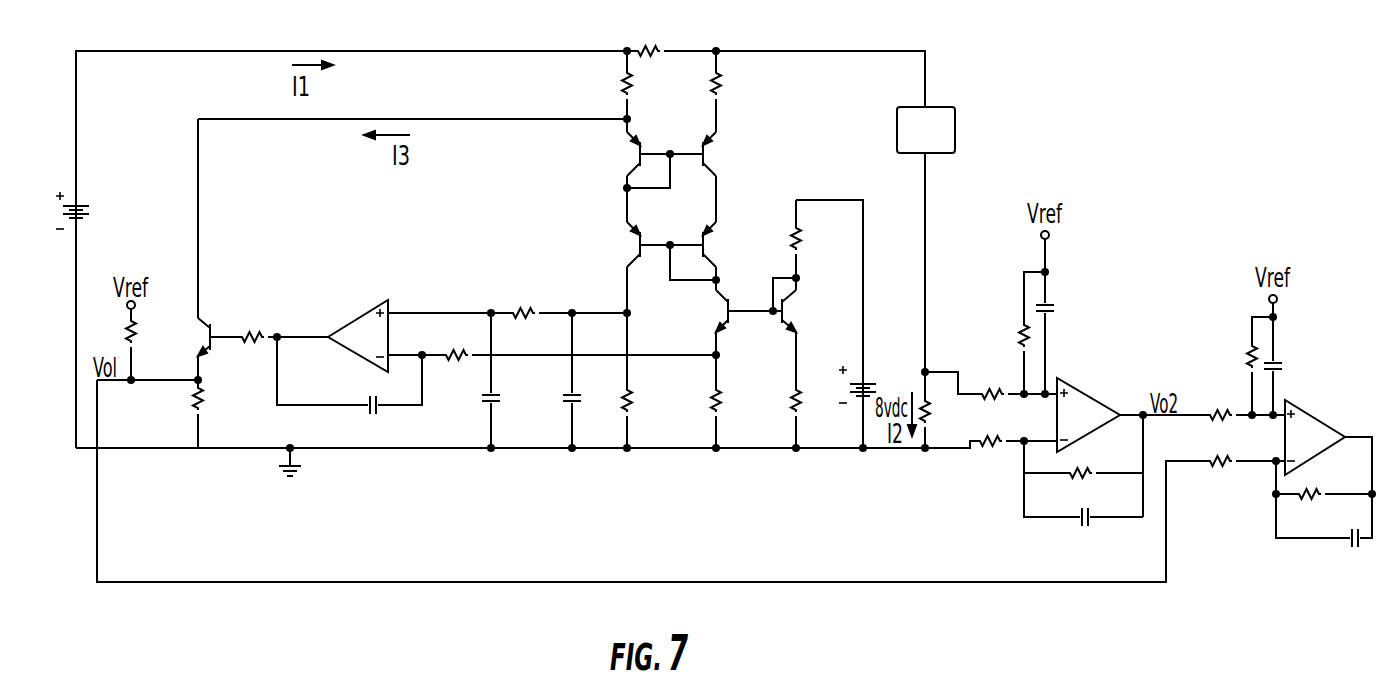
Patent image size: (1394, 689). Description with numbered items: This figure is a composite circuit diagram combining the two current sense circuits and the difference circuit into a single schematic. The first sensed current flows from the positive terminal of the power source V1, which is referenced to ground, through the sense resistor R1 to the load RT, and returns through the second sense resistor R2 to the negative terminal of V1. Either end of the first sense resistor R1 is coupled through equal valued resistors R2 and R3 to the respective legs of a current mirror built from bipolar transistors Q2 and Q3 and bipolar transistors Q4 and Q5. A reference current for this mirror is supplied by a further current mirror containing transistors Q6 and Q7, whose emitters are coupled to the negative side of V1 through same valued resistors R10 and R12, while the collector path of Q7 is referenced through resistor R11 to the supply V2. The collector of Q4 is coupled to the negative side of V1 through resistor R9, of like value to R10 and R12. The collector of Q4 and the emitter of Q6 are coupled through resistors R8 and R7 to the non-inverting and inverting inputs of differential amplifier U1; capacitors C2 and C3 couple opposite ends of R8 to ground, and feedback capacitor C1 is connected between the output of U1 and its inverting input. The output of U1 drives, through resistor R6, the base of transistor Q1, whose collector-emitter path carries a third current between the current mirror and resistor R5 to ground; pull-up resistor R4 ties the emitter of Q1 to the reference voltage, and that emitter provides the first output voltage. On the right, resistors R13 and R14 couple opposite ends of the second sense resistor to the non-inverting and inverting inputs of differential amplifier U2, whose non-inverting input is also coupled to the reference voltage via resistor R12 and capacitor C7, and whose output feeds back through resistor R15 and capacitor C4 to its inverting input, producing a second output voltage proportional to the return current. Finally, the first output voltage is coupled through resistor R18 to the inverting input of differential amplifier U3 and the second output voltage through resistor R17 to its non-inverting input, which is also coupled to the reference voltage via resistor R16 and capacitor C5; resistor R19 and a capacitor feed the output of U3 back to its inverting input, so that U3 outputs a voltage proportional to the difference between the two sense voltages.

The power source V1 is at (53, 210).
The supply V2 is at (868, 378).
The load RT is at (926, 130).
The sense resistor R1 is at (673, 36).
The resistor R2 is at (867, 249).
The resistor R3 is at (641, 87).
The pull-up resistor R4 is at (144, 342).
The resistor R5 is at (212, 411).
The resistor R6 is at (253, 321).
The resistor R7 is at (456, 340).
The resistor R8 is at (523, 299).
The resistor R9 is at (640, 401).
The resistor R10 is at (735, 401).
The resistor R11 is at (812, 238).
The resistor R12 is at (910, 367).
The resistor R13 is at (991, 380).
The resistor R14 is at (993, 459).
The resistor R15 is at (1070, 490).
The resistor R16 is at (1232, 358).
The resistor R17 is at (1222, 401).
The resistor R18 is at (1222, 480).
The resistor R19 is at (1314, 511).
The feedback capacitor C1 is at (374, 420).
The capacitor C2 is at (501, 399).
The capacitor C3 is at (582, 399).
The capacitor C4 is at (1085, 532).
The capacitor C5 is at (1312, 450).
The capacitor C7 is at (1057, 311).
The transistor Q1 is at (191, 337).
The bipolar transistor Q2 is at (616, 154).
The bipolar transistor Q3 is at (730, 154).
The bipolar transistor Q4 is at (619, 244).
The bipolar transistor Q5 is at (730, 244).
The transistor Q6 is at (709, 311).
The transistor Q7 is at (801, 311).
The differential amplifier U1 is at (357, 329).
The differential amplifier U2 is at (1088, 410).
The differential amplifier U3 is at (1316, 434).